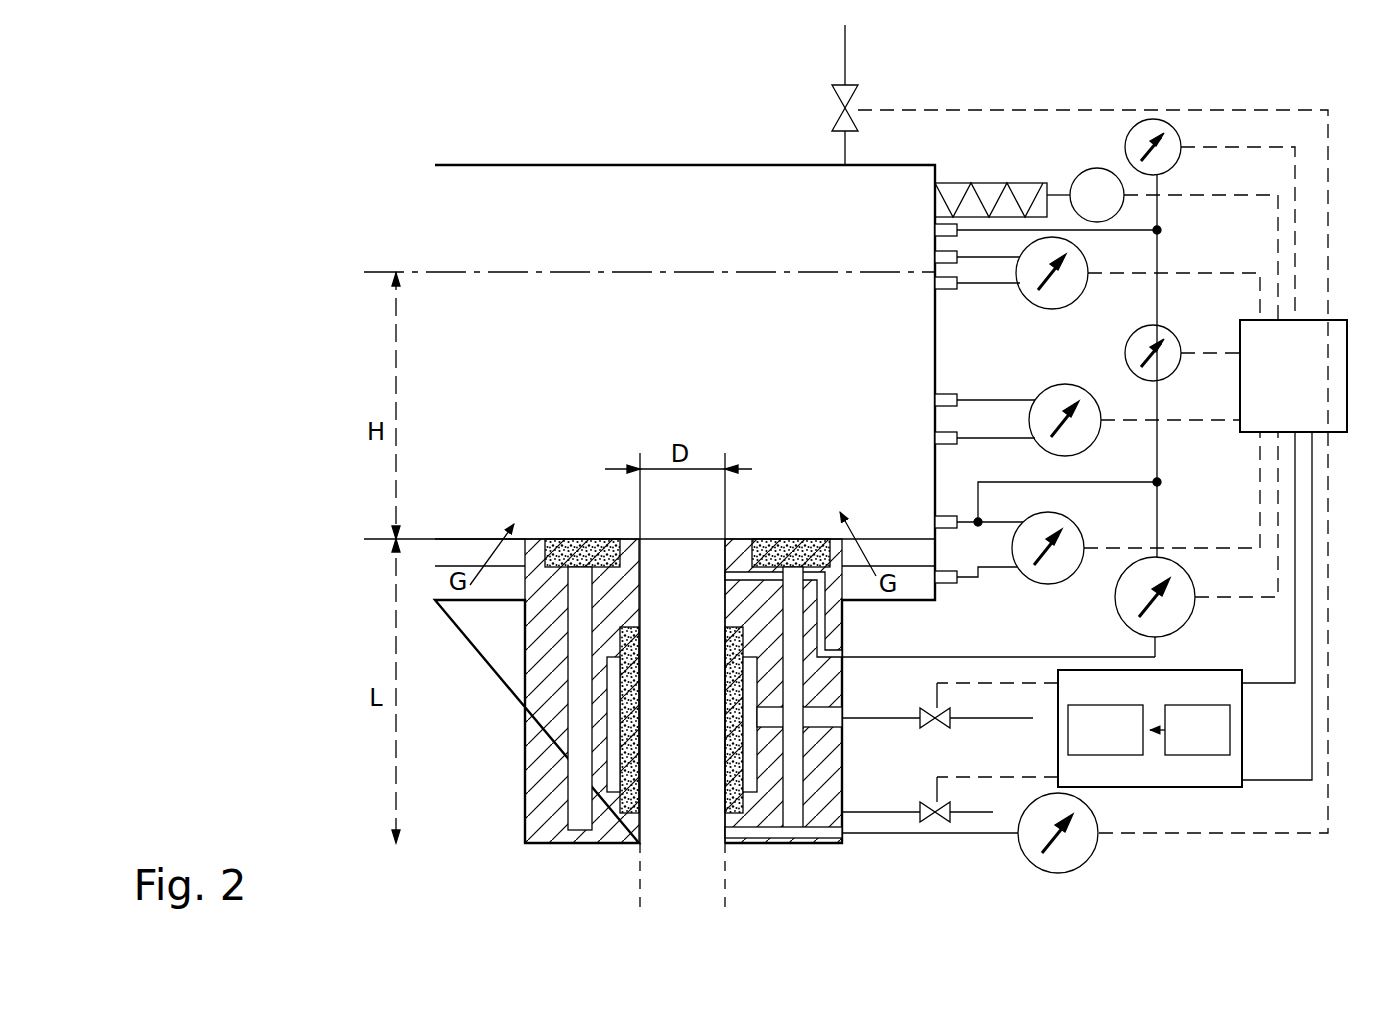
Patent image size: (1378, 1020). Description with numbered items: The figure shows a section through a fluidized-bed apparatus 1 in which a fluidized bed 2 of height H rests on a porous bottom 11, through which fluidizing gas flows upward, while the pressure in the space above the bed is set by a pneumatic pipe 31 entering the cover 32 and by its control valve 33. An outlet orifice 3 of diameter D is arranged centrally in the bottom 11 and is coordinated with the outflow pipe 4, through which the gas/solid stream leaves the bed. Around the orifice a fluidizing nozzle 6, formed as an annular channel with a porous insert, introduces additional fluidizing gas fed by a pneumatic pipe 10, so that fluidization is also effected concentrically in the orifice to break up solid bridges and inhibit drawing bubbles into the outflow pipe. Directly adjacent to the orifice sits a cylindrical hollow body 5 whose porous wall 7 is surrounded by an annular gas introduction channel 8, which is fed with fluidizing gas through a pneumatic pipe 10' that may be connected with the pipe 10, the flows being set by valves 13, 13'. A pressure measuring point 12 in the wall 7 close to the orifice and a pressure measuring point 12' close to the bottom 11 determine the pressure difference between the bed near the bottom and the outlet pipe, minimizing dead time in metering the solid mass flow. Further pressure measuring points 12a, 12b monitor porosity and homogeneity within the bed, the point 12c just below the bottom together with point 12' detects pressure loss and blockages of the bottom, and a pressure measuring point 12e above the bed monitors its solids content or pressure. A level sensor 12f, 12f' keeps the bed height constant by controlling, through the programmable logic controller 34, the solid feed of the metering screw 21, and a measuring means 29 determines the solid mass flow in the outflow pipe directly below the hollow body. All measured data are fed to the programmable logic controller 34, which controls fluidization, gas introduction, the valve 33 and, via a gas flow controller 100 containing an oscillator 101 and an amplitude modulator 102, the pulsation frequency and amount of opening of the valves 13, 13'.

The fluidized-bed apparatus 1 is at (480, 122).
The fluidized bed 2 is at (666, 364).
The outlet orifice 3 is at (668, 538).
The outflow pipe 4 is at (668, 896).
The hollow body 5 is at (632, 758).
The fluidizing nozzle 6 is at (777, 555).
The porous wall 7 is at (640, 645).
The annular gas introduction channel 8 is at (612, 706).
The pneumatic pipe 10 is at (871, 794).
The pneumatic pipe 10' is at (838, 694).
The bottom 11 is at (465, 552).
The pressure measuring point 12 is at (908, 697).
The pressure measuring point 12' is at (1052, 508).
The pressure measuring point 12a is at (932, 438).
The pressure measuring point 12b is at (932, 400).
The pressure measuring point 12c is at (928, 578).
The pressure measuring point 12e is at (932, 228).
The level sensor 12f is at (1055, 278).
The level sensor 12f' is at (932, 243).
The valve 13 is at (976, 705).
The valve 13' is at (966, 799).
The metering screw 21 is at (992, 186).
The measuring means 29 is at (1022, 862).
The pneumatic pipe 31 is at (840, 52).
The cover 32 is at (602, 166).
The control valve 33 is at (832, 108).
The programmable logic controller 34 is at (1278, 384).
The gas flow controller 100 is at (1089, 725).
The oscillator 101 is at (1175, 706).
The amplitude modulator 102 is at (1080, 706).